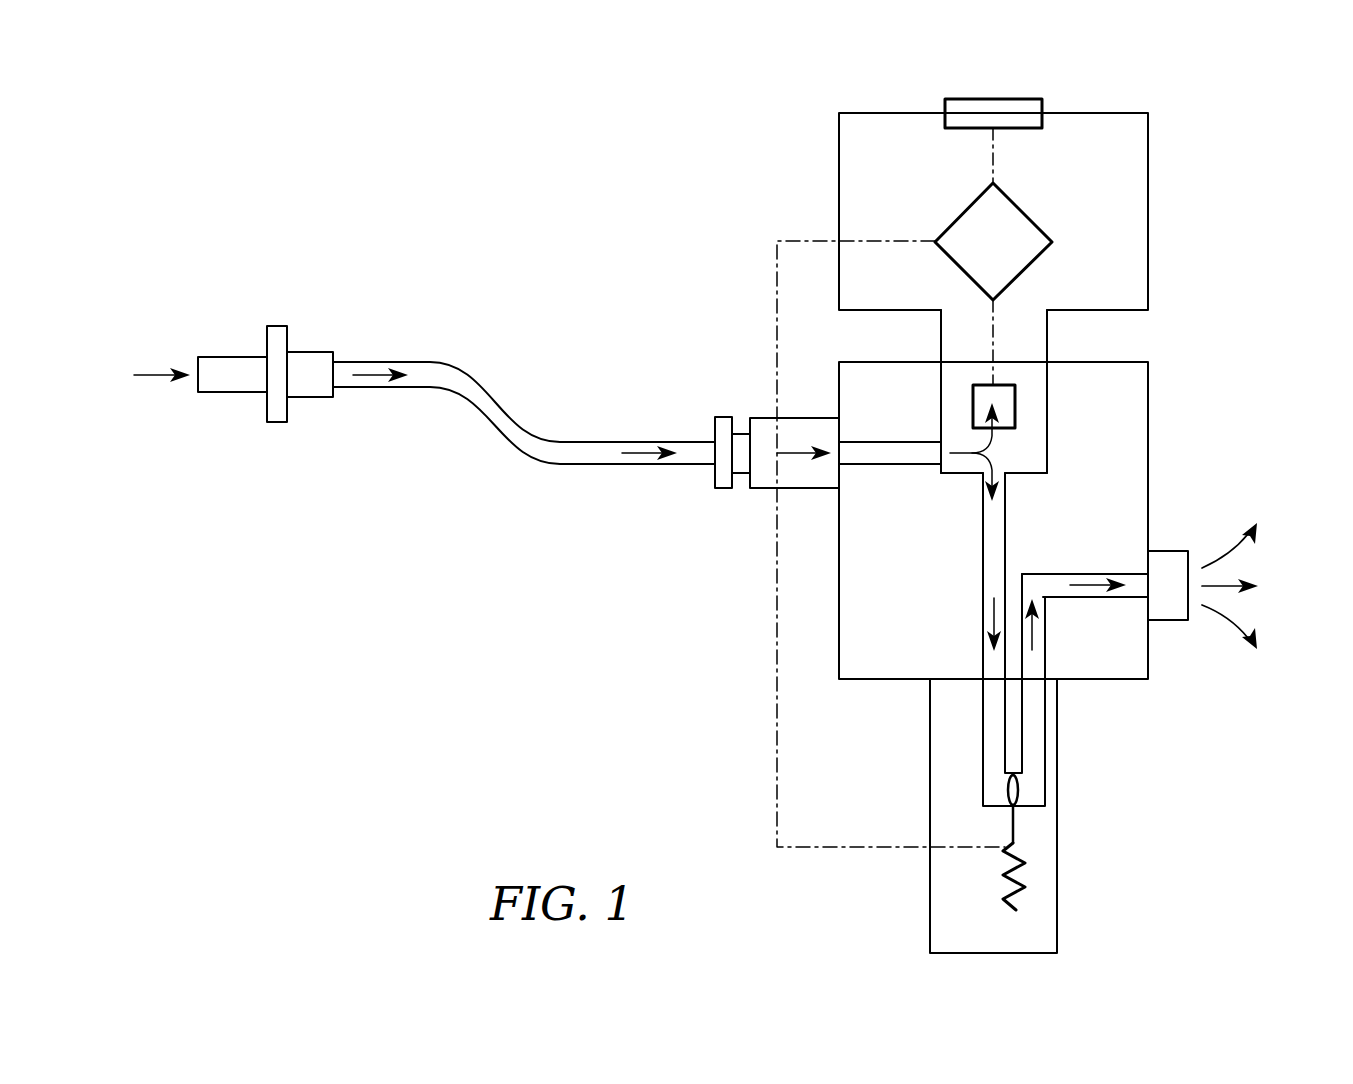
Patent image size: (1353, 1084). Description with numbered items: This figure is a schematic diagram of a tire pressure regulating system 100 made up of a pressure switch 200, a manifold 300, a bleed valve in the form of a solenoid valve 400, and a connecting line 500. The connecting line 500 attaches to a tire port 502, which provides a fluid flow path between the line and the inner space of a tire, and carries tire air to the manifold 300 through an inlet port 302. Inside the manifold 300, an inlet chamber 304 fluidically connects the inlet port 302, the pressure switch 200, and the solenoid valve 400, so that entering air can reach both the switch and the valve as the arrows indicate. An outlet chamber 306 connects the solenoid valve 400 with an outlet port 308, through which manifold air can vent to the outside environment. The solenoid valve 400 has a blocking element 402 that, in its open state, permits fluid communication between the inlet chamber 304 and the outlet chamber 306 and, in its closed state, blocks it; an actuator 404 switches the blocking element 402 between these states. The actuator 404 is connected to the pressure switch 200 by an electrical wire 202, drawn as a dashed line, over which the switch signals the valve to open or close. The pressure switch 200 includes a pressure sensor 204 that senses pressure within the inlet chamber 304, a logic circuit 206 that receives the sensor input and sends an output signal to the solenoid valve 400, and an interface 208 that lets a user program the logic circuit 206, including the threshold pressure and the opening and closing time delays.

The tire pressure regulating system 100 is at (636, 128).
The pressure switch 200 is at (1117, 139).
The electrical wire 202 is at (777, 313).
The pressure sensor 204 is at (1015, 404).
The logic circuit 206 is at (1022, 218).
The interface 208 is at (1018, 100).
The manifold 300 is at (1117, 474).
The inlet port 302 is at (762, 475).
The inlet chamber 304 is at (1006, 536).
The outlet chamber 306 is at (1095, 600).
The outlet port 308 is at (1167, 622).
The solenoid valve 400 is at (1025, 925).
The blocking element 402 is at (1008, 792).
The actuator 404 is at (985, 880).
The connecting line 500 is at (468, 382).
The tire port 502 is at (310, 367).